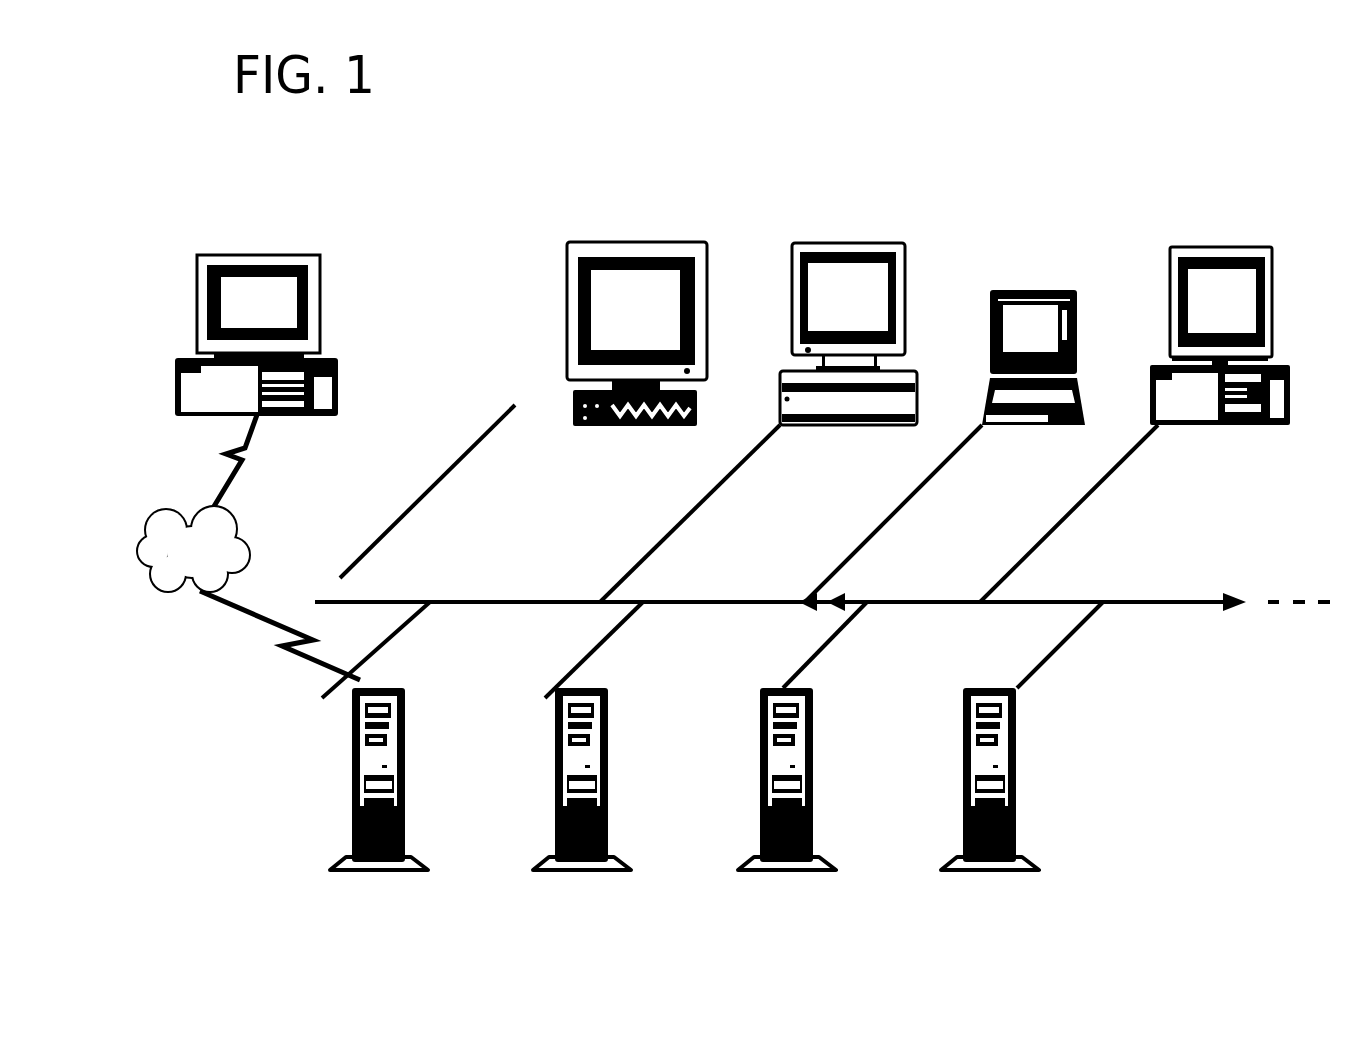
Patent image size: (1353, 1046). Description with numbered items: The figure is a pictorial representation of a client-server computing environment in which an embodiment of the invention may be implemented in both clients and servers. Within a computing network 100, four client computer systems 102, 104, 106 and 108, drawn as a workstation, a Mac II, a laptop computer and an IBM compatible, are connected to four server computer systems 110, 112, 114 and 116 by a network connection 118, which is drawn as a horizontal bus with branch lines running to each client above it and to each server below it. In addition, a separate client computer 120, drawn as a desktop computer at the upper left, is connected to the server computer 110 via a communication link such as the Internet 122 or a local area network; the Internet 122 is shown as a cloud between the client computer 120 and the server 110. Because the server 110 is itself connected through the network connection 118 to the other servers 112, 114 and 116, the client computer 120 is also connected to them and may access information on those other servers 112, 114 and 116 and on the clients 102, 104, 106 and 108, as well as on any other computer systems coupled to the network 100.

The computing network 100 is at (1215, 751).
The client computer system 102 is at (633, 242).
The client computer system 104 is at (848, 243).
The client computer system 106 is at (1033, 290).
The client computer system 108 is at (1220, 247).
The server computer system 110 is at (405, 780).
The server computer system 112 is at (608, 782).
The server computer system 114 is at (813, 784).
The server computer system 116 is at (1016, 786).
The network connection 118 is at (923, 604).
The client computer 120 is at (257, 255).
The Internet 122 is at (250, 550).